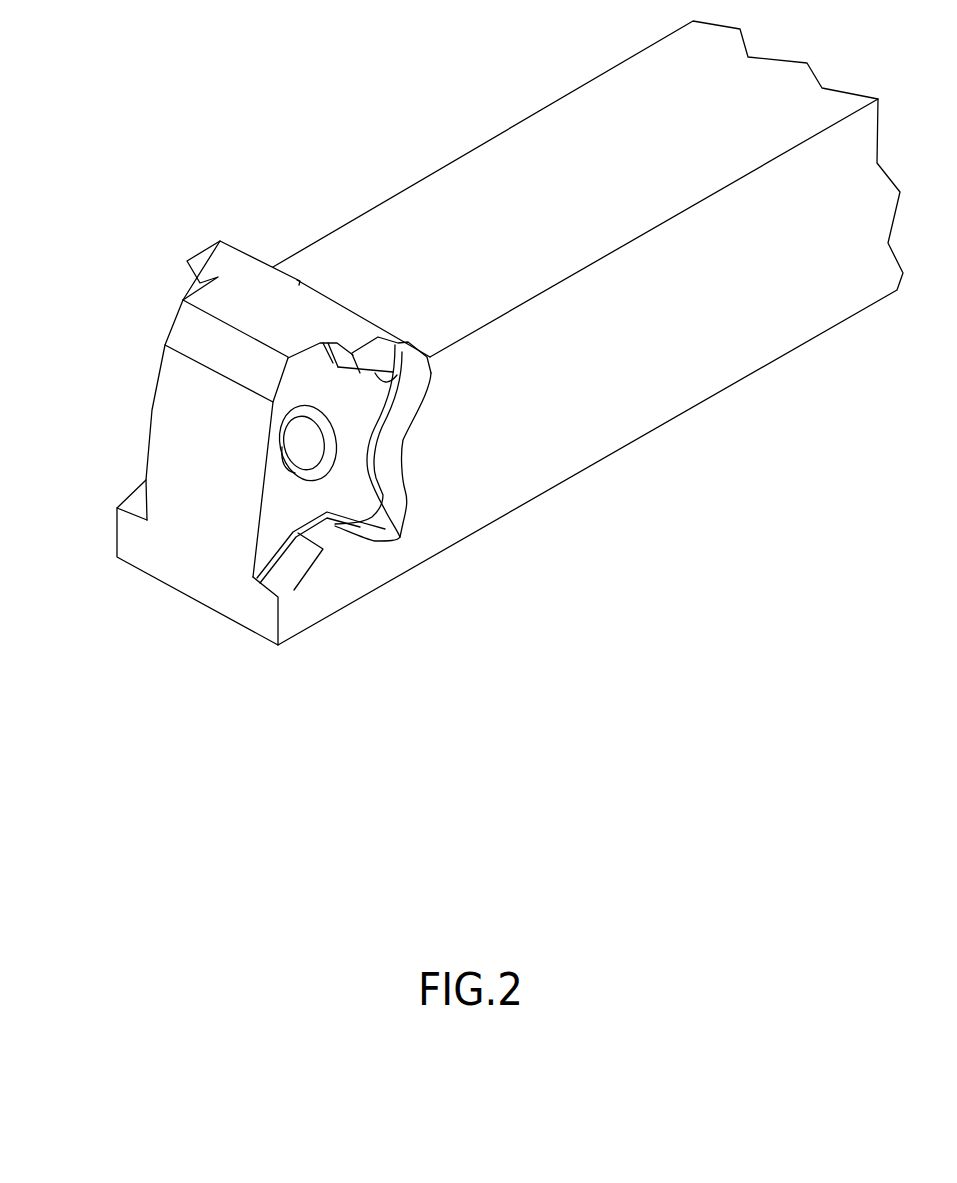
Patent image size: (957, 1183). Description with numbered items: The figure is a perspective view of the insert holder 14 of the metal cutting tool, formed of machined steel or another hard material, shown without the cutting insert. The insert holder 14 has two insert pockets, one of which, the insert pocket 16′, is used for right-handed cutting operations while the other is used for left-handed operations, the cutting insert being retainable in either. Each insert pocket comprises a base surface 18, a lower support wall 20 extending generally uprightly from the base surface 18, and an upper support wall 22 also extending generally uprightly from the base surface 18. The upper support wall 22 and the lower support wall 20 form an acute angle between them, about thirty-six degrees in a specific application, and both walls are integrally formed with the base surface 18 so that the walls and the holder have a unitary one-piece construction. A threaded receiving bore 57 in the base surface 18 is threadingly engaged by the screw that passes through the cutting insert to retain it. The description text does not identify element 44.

The insert holder 14 is at (730, 317).
The insert pocket for right-handed cutting operations 16′ is at (283, 552).
The base surface 18 is at (345, 473).
The lower support wall 20 is at (325, 538).
The upper support wall 22 is at (394, 371).
The base portion 44 is at (177, 525).
The threaded receiving bore 57 is at (265, 507).